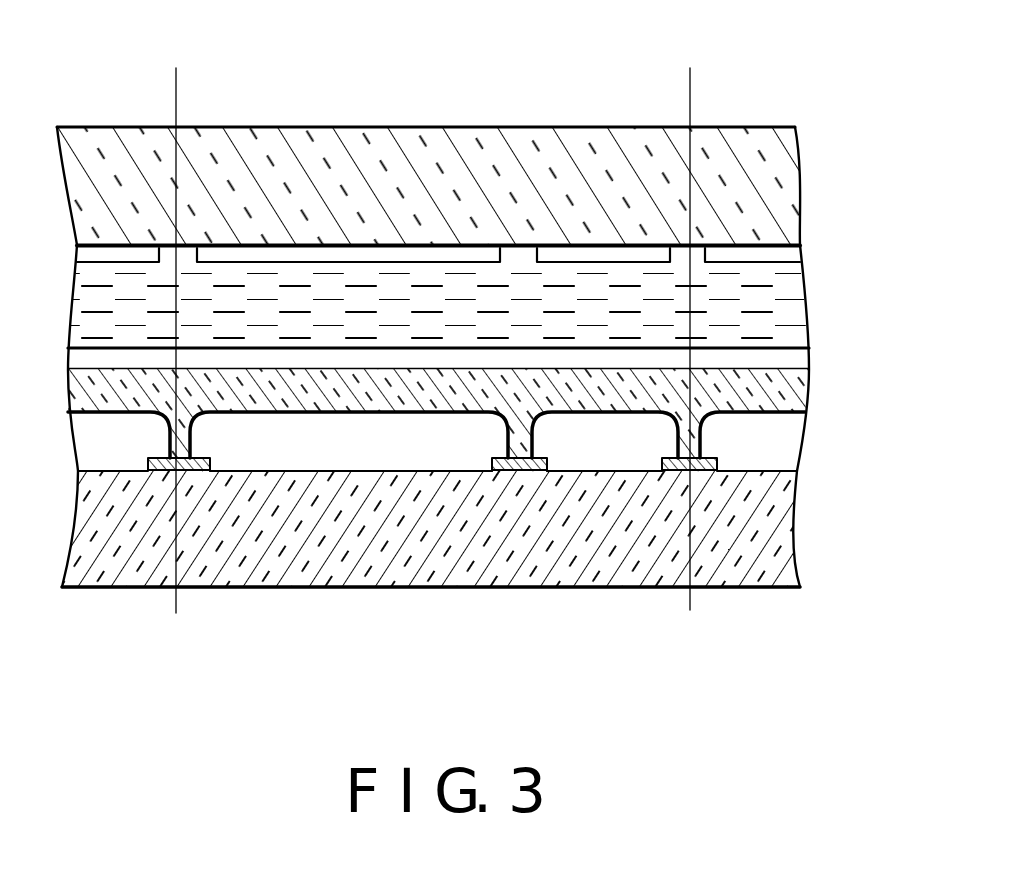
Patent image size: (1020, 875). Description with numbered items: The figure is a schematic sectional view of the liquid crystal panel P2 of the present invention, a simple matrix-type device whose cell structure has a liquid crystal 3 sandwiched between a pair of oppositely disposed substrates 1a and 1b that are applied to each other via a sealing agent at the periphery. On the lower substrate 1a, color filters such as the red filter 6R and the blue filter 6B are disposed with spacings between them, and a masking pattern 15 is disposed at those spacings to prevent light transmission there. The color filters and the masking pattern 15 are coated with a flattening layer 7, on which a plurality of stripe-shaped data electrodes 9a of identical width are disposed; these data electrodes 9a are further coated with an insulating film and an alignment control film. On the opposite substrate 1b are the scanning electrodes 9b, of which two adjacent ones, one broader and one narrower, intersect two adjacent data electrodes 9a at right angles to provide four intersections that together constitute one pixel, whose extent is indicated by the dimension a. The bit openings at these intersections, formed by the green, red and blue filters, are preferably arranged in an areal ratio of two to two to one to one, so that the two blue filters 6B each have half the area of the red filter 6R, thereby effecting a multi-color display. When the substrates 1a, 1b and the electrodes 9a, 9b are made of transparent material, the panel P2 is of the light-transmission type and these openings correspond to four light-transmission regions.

The substrate 1a is at (778, 532).
The substrate 1b is at (785, 191).
The liquid crystal 3 is at (790, 293).
The red filter 6R is at (355, 455).
The blue filter 6B is at (610, 455).
The flattening layer 7 is at (790, 395).
The data electrodes 9a is at (795, 360).
The scanning electrodes 9b is at (785, 258).
The masking pattern 15 is at (717, 466).
The pixel pitch a is at (689, 83).
The liquid crystal panel P2 is at (738, 119).